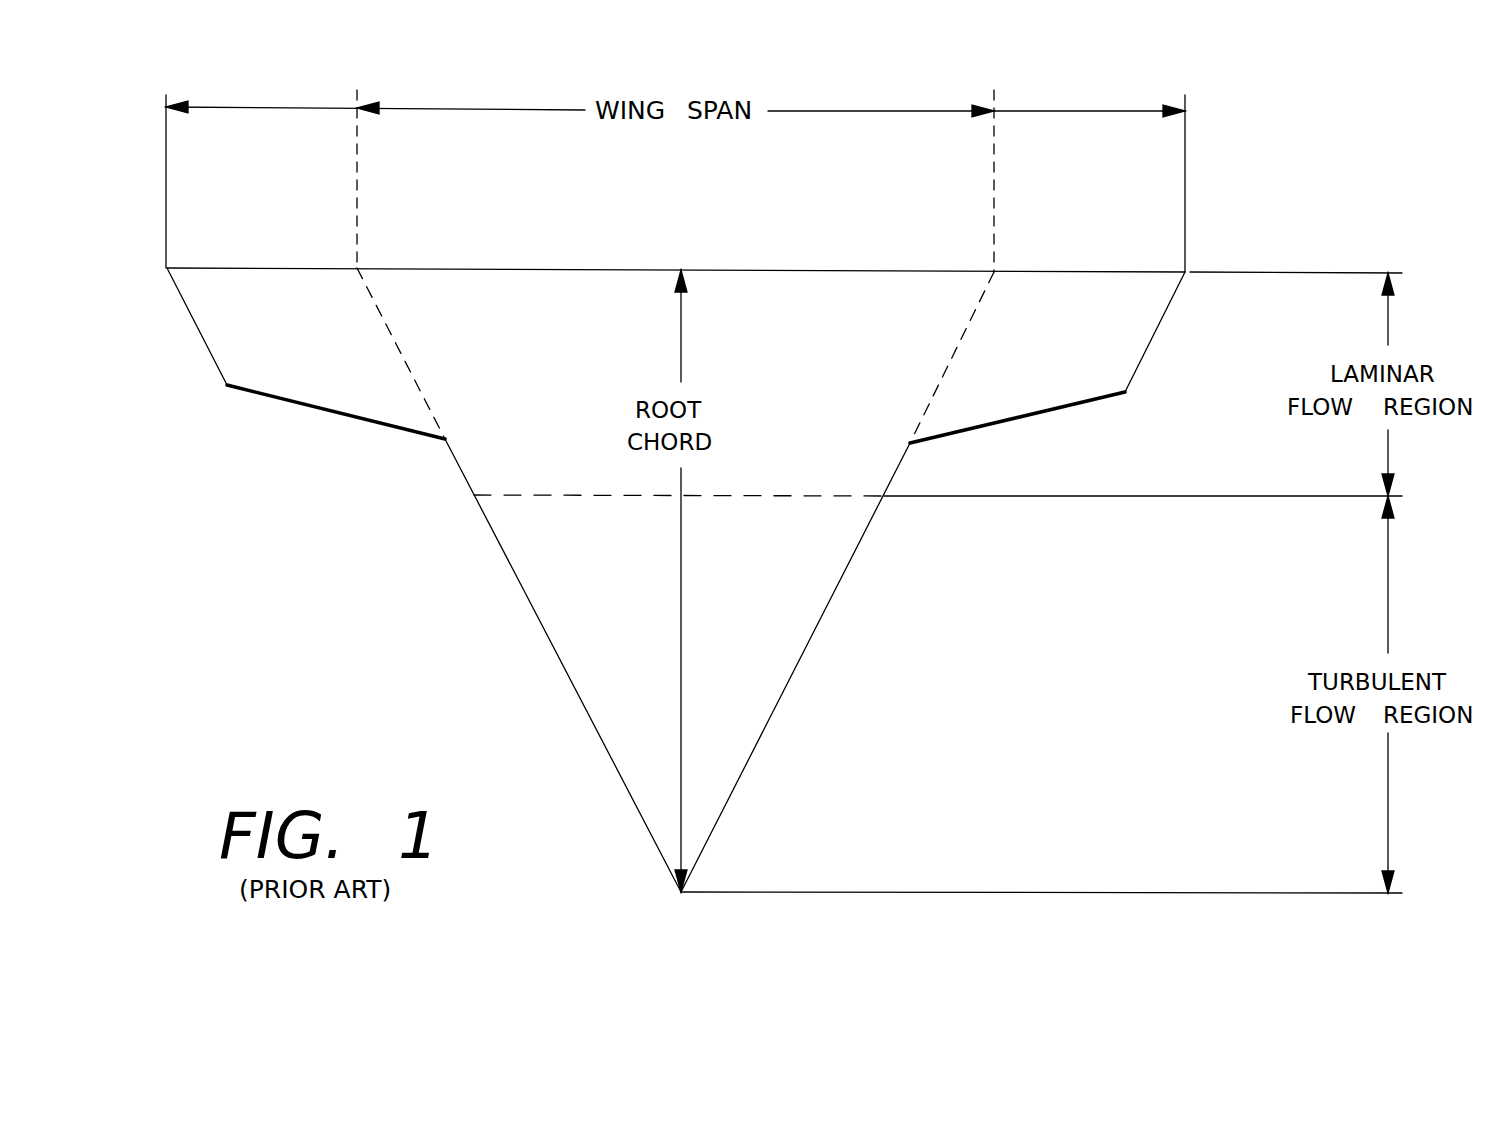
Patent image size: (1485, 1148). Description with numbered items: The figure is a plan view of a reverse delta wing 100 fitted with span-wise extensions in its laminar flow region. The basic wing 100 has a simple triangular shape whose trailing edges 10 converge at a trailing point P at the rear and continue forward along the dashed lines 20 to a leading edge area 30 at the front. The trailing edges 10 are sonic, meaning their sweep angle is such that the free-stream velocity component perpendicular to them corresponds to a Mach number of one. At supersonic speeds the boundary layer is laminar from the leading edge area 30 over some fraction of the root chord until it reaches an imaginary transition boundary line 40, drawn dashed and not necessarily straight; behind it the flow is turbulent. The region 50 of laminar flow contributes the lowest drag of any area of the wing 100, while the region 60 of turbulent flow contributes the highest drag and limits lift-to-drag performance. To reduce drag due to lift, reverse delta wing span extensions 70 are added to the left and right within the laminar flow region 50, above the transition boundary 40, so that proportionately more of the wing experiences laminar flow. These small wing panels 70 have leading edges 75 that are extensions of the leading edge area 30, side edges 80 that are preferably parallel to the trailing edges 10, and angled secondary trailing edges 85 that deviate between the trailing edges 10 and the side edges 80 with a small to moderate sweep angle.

The trailing edges 10 is at (580, 692).
The dashed lines 20 is at (390, 330).
The leading edge area 30 is at (632, 268).
The transition boundary line 40 is at (531, 497).
The region of laminar flow 50 is at (833, 340).
The region of turbulent flow 60 is at (764, 564).
The reverse delta wing span extensions 70 is at (300, 338).
The leading edges of wing panels 75 is at (257, 267).
The side edges 80 is at (193, 322).
The angled secondary trailing edges 85 is at (323, 410).
The reverse delta wing 100 is at (373, 518).
The trailing point P is at (681, 895).